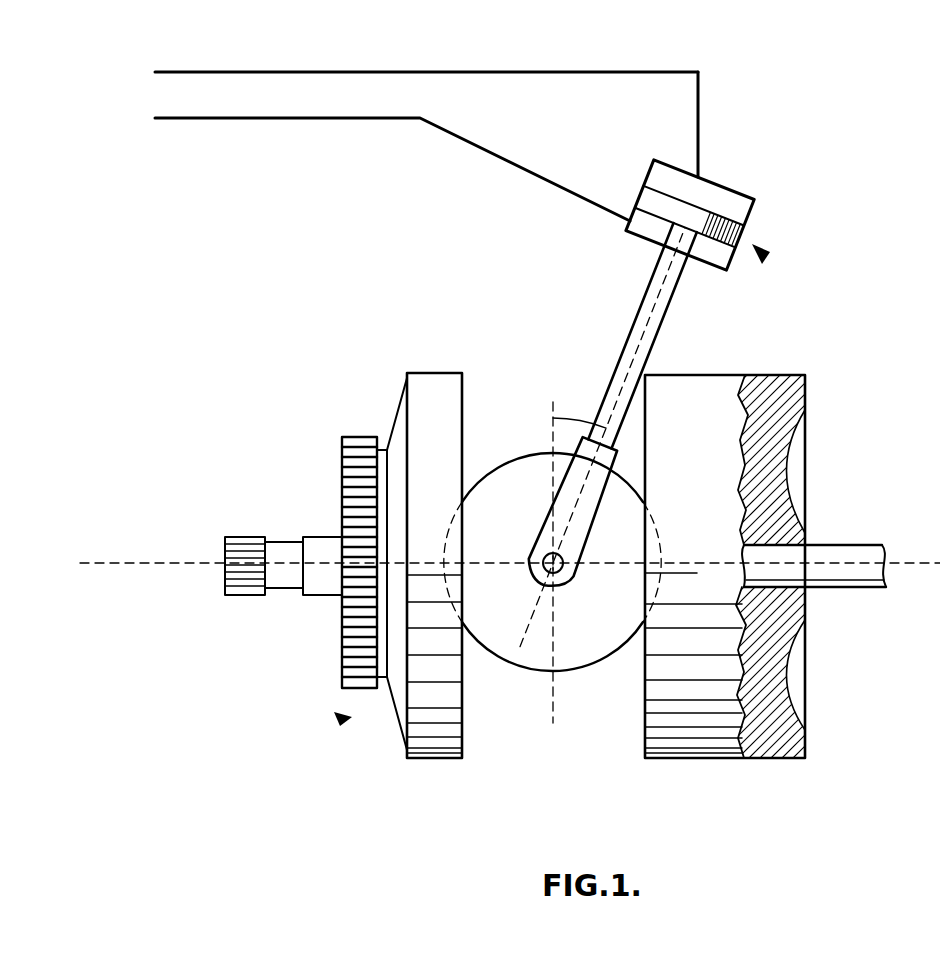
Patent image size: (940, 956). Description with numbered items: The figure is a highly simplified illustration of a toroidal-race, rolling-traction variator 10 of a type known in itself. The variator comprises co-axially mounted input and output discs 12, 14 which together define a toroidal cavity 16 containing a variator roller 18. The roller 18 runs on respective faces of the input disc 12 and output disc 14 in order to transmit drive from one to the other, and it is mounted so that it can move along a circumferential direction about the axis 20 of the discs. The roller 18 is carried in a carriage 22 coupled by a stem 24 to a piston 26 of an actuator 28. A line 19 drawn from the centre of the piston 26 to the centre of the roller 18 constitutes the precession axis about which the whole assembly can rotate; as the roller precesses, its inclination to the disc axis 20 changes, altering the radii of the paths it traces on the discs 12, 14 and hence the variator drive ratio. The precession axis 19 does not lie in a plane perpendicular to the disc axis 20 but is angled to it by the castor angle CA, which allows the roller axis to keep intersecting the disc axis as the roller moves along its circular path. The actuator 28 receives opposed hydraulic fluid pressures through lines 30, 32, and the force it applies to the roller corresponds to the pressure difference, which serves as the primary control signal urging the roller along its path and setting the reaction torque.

The variator 10 is at (342, 722).
The input disc 12 is at (437, 758).
The output disc 14 is at (740, 760).
The toroidal cavity 16 is at (573, 718).
The variator roller 18 is at (609, 630).
The precession axis 19 is at (647, 323).
The axis of the discs 20 is at (932, 563).
The carriage 22 is at (558, 470).
The stem 24 is at (627, 345).
The piston 26 is at (700, 192).
The actuator 28 is at (760, 256).
The hydraulic line 30 is at (290, 72).
The hydraulic line 32 is at (300, 118).
The castor angle CA is at (587, 413).